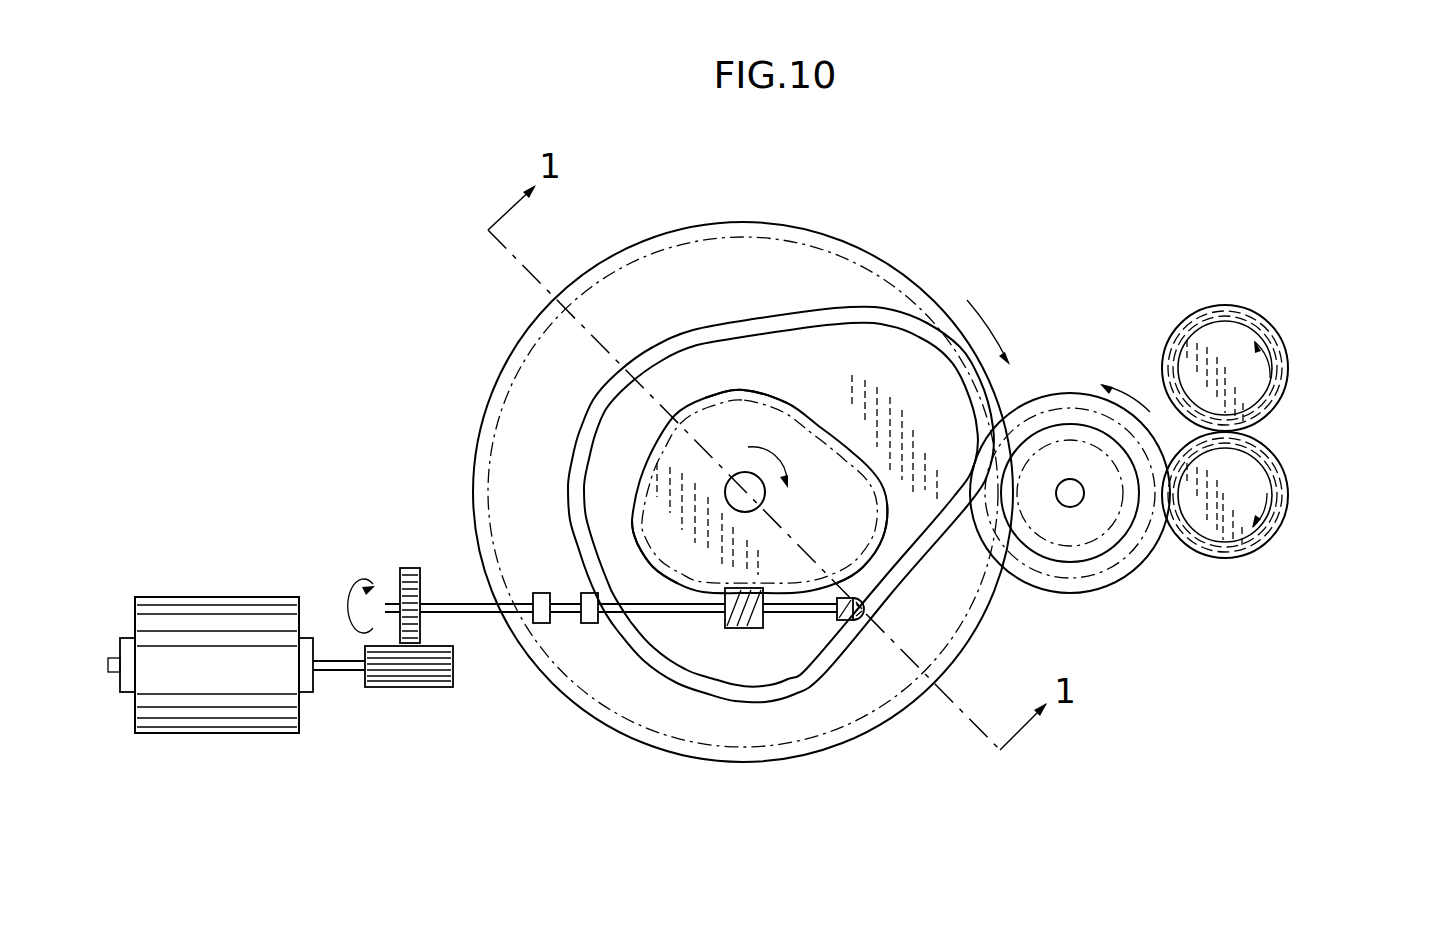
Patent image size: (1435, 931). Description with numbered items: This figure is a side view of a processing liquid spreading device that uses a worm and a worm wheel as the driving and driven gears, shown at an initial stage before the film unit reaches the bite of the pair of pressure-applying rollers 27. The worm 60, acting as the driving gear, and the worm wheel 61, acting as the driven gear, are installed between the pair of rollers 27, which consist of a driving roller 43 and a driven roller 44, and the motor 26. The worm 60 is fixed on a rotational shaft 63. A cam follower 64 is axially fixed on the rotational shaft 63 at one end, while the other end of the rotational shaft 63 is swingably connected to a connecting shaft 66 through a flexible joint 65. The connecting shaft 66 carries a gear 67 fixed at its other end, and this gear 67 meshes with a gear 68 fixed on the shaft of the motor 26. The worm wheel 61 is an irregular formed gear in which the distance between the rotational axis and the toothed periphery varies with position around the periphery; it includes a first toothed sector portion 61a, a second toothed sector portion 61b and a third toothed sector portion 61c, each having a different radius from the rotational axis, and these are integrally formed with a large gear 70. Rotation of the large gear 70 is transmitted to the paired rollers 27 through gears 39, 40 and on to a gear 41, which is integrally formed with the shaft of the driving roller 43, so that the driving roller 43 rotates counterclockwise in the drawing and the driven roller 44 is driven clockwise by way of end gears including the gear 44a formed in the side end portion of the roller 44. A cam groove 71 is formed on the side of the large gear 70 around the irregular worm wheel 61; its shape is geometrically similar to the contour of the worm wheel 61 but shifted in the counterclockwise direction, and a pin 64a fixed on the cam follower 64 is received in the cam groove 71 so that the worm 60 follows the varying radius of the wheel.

The motor 26 is at (177, 607).
The gear 67 is at (410, 575).
The gear 68 is at (407, 687).
The connecting shaft 66 is at (460, 604).
The flexible joint 65 is at (586, 625).
The rotational shaft 63 is at (675, 615).
The worm 60 is at (745, 630).
The cam follower 64 is at (840, 625).
The pin 64a is at (862, 620).
The large gear 70 is at (715, 222).
The cam groove 71 is at (603, 393).
The worm wheel 61 is at (806, 408).
The first toothed sector portion 61a is at (885, 535).
The second toothed sector portion 61b is at (727, 392).
The third toothed sector portion 61c is at (640, 563).
The gear 40 is at (1068, 393).
The gear 39 is at (1108, 550).
The gear 41 is at (1240, 560).
The driving roller 43 is at (1264, 524).
The driven roller 44 is at (1264, 339).
The gear 44a is at (1243, 303).
The pair of rollers 27 is at (1295, 431).